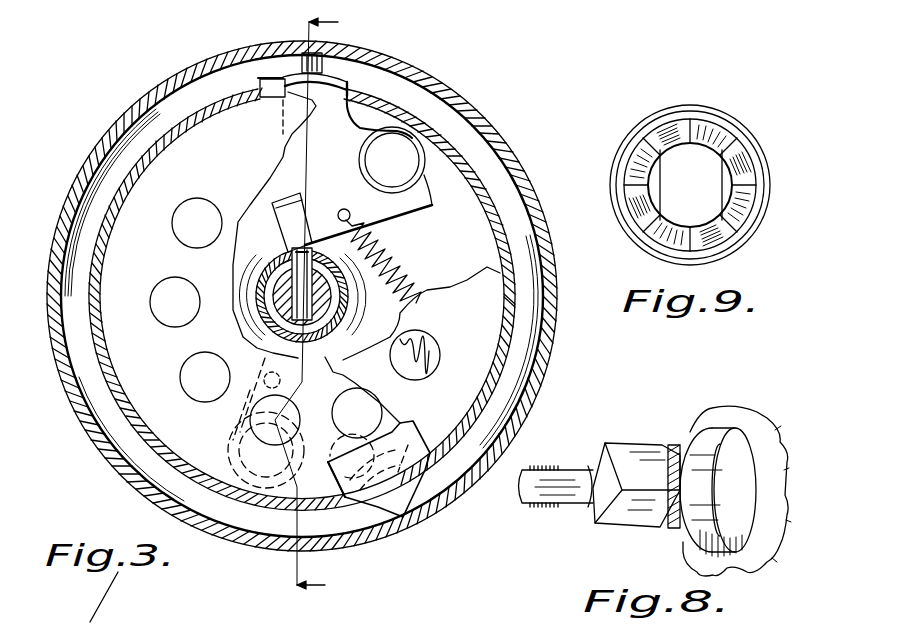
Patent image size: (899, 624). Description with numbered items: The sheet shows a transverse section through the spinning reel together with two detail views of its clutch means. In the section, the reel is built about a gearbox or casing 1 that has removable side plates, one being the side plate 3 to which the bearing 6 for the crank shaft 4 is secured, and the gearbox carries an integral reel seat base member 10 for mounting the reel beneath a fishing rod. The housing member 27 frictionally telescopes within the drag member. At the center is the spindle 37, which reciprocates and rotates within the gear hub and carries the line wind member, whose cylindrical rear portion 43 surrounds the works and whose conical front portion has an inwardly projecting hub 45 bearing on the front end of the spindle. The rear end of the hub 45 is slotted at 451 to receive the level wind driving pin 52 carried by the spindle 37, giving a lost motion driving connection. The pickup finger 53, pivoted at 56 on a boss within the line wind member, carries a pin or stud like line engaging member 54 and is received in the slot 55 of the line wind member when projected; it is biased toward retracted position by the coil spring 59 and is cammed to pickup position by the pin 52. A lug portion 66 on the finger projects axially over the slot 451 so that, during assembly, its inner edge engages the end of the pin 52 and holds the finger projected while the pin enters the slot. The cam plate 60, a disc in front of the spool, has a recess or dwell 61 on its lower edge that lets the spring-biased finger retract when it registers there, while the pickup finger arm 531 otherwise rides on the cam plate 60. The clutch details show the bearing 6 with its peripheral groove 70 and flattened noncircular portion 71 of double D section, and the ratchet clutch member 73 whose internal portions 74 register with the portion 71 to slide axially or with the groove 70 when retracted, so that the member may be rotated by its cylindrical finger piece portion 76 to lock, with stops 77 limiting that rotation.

In FIG. 3, the gearbox or casing 1 is at (315, 308).
In FIG. 8, the side plate 3 is at (730, 413).
In FIG. 8, the shaft 4 is at (585, 508).
In FIG. 8, the bearing 6 is at (708, 437).
In FIG. 3, the reel seat base member 10 is at (225, 618).
In FIG. 3, the housing member 27 is at (105, 140).
In FIG. 3, the spindle 37 is at (283, 290).
In FIG. 3, the cylindrical rear portion 43 is at (185, 115).
In FIG. 3, the hub 45 is at (263, 315).
In FIG. 3, the slot 451 is at (317, 263).
In FIG. 3, the level wind driving pin 52 is at (300, 258).
In FIG. 3, the pickup finger 53 is at (333, 128).
In FIG. 3, the pickup finger arm 531 is at (290, 78).
In FIG. 3, the pin or stud like line engaging member 54 is at (318, 62).
In FIG. 3, the slot 55 is at (258, 80).
In FIG. 3, the pivot 56 is at (395, 155).
In FIG. 3, the coil spring 59 is at (400, 262).
In FIG. 3, the cam plate 60 is at (135, 205).
In FIG. 3, the recess or dwell 61 is at (385, 528).
In FIG. 3, the lug portion 66 is at (310, 250).
In FIG. 8, the peripheral groove 70 is at (676, 462).
In FIG. 8, the noncircular portion 71 is at (600, 458).
In FIG. 9, the ratchet clutch member 73 is at (727, 140).
In FIG. 9, the internal portions 74 is at (722, 183).
In FIG. 9, the cylindrical finger piece portion 76 is at (757, 160).
In FIG. 9, the stops 77 is at (655, 170).